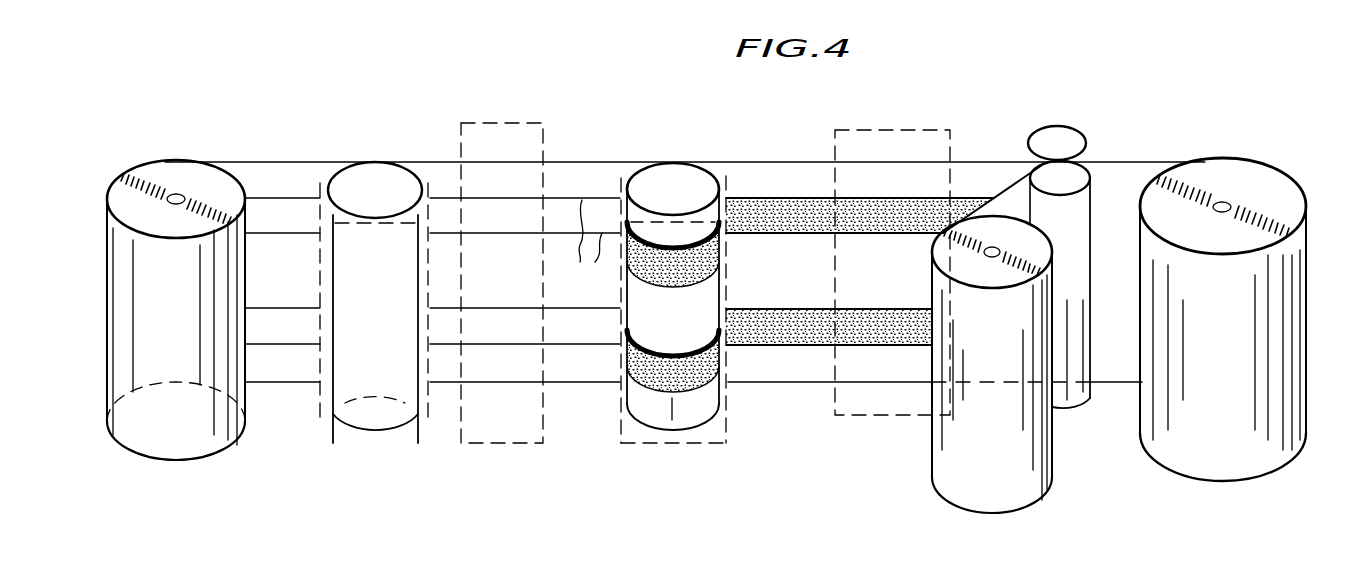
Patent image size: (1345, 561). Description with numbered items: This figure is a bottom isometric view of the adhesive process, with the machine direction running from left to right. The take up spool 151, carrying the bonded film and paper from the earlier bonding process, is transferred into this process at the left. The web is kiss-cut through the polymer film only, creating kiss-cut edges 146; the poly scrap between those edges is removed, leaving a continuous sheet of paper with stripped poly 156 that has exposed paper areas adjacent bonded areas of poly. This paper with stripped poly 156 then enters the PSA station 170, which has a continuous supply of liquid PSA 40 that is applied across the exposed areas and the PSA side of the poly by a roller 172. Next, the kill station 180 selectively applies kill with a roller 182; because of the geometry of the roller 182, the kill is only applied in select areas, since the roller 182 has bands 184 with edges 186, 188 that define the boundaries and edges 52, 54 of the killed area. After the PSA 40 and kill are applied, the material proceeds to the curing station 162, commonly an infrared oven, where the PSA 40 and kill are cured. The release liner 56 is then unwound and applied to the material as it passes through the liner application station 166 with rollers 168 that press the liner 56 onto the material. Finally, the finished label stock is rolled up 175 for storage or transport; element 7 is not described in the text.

The tank 7 is at (929, 481).
The PSA 40 is at (557, 183).
The edge of killed area 52 is at (797, 346).
The edge of killed area 54 is at (790, 309).
The release liner 56 is at (1010, 178).
The kiss-cut edges 146 is at (587, 253).
The take up spool 151 is at (153, 164).
The paper with stripped poly 156 is at (262, 155).
The curing station 162 is at (474, 109).
The liner application station 166 is at (1062, 121).
The rollers 168 is at (1088, 178).
The PSA station 170 is at (372, 141).
The roller 172 is at (330, 168).
The rolled up 175 is at (1253, 158).
The kill station 180 is at (670, 141).
The roller 182 is at (718, 163).
The bands 184 is at (700, 404).
The edge of band 186 is at (667, 357).
The edge of band 188 is at (672, 398).